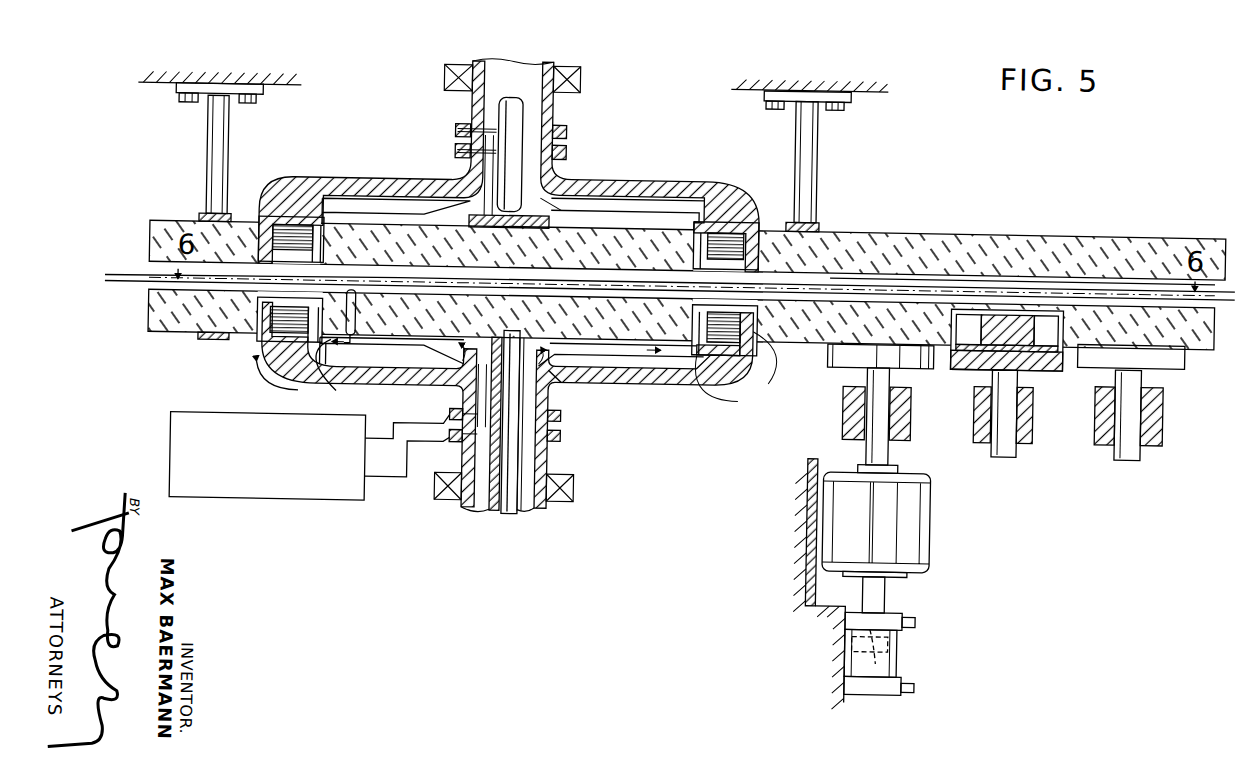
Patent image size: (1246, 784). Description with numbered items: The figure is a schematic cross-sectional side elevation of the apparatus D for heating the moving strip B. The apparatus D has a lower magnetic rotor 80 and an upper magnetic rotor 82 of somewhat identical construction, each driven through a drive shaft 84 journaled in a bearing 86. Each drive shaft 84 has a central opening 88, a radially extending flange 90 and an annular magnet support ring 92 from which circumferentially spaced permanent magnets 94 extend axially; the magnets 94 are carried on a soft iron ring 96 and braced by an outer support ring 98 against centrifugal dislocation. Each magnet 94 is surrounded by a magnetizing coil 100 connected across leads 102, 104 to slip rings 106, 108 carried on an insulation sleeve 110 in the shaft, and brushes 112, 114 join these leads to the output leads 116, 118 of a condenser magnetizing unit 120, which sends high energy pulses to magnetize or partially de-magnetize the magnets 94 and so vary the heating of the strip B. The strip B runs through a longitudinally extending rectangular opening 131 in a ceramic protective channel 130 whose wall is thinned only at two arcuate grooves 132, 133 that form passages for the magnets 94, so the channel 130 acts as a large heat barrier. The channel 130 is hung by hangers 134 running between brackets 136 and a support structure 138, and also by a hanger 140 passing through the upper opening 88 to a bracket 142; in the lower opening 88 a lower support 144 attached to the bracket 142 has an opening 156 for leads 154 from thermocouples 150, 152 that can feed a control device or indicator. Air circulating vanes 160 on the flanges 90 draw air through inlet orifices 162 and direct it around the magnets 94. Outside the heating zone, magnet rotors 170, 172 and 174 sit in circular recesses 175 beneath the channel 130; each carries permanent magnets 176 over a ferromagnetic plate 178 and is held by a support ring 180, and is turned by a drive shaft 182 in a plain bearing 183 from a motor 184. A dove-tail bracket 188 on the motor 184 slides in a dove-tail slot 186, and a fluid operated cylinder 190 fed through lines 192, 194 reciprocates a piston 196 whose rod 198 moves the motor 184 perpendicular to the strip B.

The lower magnetic rotor 80 is at (650, 390).
The upper magnetic rotor 82 is at (636, 177).
The drive shaft 84 is at (455, 128).
The bearing 86 is at (577, 497).
The opening 88 is at (540, 76).
The radially extending flange 90 is at (382, 390).
The annular magnet support ring 92 is at (750, 347).
The permanent magnets 94 is at (300, 360).
The ring 96 is at (722, 385).
The outer support ring 98 is at (742, 340).
The magnetizing coil 100 is at (262, 353).
The lead 102 is at (438, 374).
The lead 104 is at (440, 491).
The slip ring 106 is at (560, 386).
The slip ring 108 is at (563, 418).
The insulation sleeve 110 is at (563, 437).
The brush 112 is at (452, 416).
The brush 114 is at (452, 442).
The output lead 116 is at (370, 483).
The output lead 118 is at (410, 483).
The condenser magnetizing unit 120 is at (315, 496).
The protective channel 130 is at (150, 337).
The rectangular opening 131 is at (152, 247).
The arcuate groove 132 is at (263, 340).
The arcuate groove 133 is at (730, 360).
The hangers 134 is at (228, 170).
The brackets 136 is at (818, 226).
The support structure 138 is at (280, 92).
The hanger 140 is at (521, 135).
The bracket 142 is at (546, 231).
The lower support 144 is at (471, 512).
The thermocouple 150 is at (520, 282).
The thermocouple 152 is at (351, 343).
The leads 154 is at (514, 518).
The opening 156 is at (497, 516).
The air circulating vanes 160 is at (692, 357).
The inlet orifices 162 is at (620, 385).
The magnet rotor 170 is at (925, 367).
The magnet rotor 172 is at (1050, 366).
The magnet rotor 174 is at (1184, 355).
The circular recesses 175 is at (950, 304).
The permanent magnets 176 is at (969, 308).
The ferromagnetic plate 178 is at (994, 426).
The support ring 180 is at (1117, 420).
The drive shaft 182 is at (891, 452).
The plain bearing 183 is at (913, 410).
The motor 184 is at (931, 527).
The dove-tail slot 186 is at (830, 461).
The dove-tail bracket 188 is at (811, 532).
The fluid operated cylinder 190 is at (904, 652).
The line 192 is at (921, 618).
The line 194 is at (921, 684).
The piston 196 is at (880, 652).
The rod 198 is at (891, 592).
The moving strip B is at (1033, 280).
The apparatus D is at (620, 145).